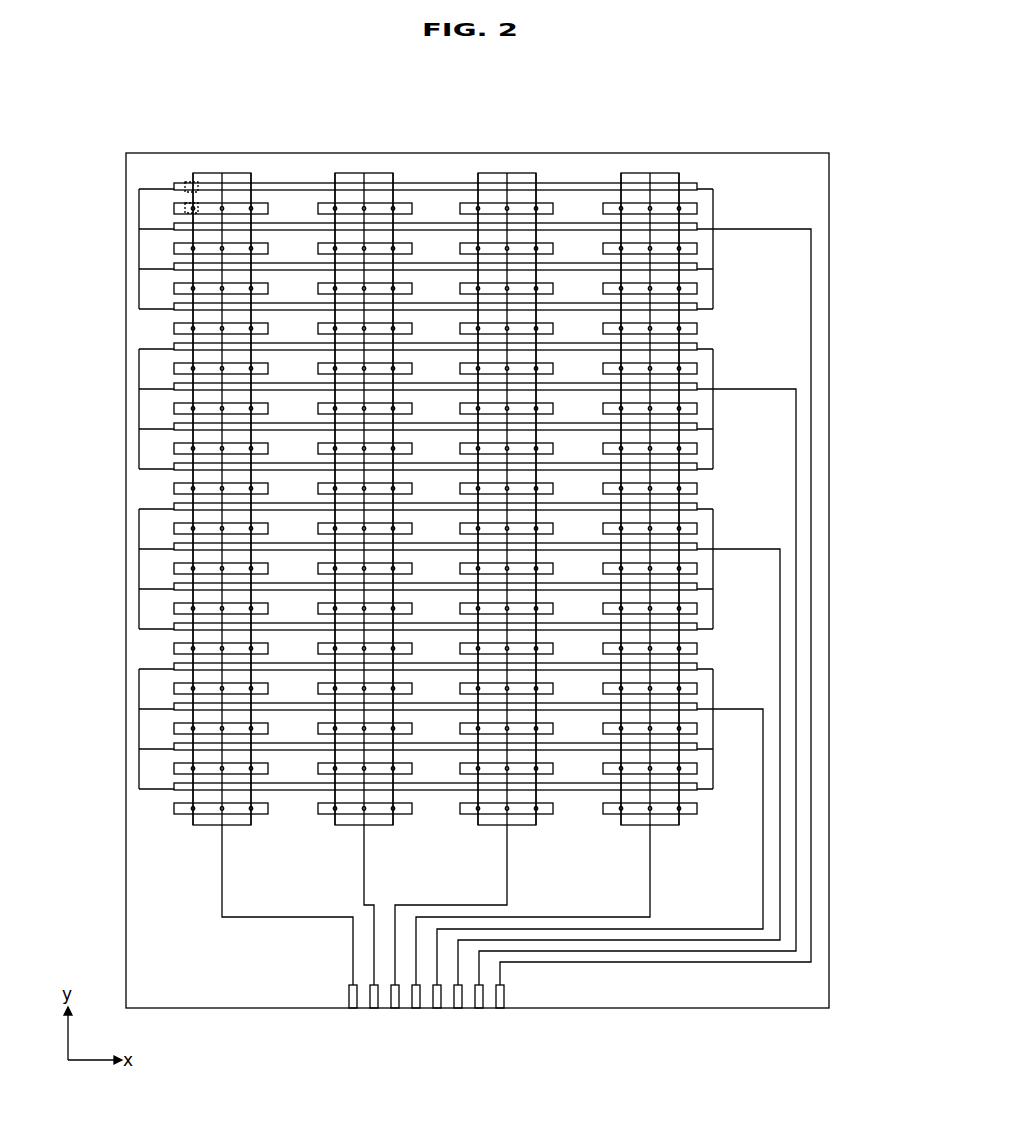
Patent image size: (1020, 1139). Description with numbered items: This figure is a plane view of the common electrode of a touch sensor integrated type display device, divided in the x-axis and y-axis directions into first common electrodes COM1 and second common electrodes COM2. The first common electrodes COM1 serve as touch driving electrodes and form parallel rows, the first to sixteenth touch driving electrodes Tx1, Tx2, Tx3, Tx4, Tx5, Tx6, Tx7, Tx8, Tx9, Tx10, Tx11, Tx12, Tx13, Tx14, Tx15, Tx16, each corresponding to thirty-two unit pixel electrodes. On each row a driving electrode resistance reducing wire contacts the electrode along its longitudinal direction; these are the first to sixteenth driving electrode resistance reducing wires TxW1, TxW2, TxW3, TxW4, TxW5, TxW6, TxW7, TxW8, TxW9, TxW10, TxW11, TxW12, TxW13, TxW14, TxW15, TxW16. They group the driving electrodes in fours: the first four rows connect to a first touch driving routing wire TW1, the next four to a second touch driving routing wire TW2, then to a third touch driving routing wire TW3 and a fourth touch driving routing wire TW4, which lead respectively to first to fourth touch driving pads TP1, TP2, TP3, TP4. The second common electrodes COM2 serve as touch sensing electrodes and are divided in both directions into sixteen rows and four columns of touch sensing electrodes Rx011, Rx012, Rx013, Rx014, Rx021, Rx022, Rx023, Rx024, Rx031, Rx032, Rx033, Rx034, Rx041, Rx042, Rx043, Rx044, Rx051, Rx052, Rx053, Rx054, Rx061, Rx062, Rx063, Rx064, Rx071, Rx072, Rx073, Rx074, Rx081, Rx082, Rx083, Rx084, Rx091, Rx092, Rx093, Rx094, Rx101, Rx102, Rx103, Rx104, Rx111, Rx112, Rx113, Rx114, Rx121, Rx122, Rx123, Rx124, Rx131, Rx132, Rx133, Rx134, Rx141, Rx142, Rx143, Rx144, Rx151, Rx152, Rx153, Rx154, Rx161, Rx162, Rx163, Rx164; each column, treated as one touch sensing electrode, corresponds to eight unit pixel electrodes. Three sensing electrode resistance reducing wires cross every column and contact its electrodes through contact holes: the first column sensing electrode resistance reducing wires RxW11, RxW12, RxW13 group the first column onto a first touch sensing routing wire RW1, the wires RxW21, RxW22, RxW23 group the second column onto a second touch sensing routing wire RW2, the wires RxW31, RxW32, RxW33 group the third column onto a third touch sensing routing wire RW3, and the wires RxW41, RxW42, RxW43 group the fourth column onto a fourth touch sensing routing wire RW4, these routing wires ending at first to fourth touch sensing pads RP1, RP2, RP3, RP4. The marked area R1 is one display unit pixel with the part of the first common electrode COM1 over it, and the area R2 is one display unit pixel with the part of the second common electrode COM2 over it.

The first common electrode COM1 is at (376, 115).
The second common electrode COM2 is at (562, 140).
The first touch driving electrode Tx1 is at (174, 190).
The second touch driving electrode Tx2 is at (174, 230).
The third touch driving electrode Tx3 is at (174, 270).
The fourth touch driving electrode Tx4 is at (174, 310).
The fifth touch driving electrode Tx5 is at (174, 350).
The sixth touch driving electrode Tx6 is at (174, 390).
The seventh touch driving electrode Tx7 is at (174, 430).
The eighth touch driving electrode Tx8 is at (174, 470).
The ninth touch driving electrode Tx9 is at (174, 510).
The tenth touch driving electrode Tx10 is at (174, 550).
The eleventh touch driving electrode Tx11 is at (174, 590).
The twelfth touch driving electrode Tx12 is at (174, 630).
The thirteenth touch driving electrode Tx13 is at (174, 670).
The fourteenth touch driving electrode Tx14 is at (174, 710).
The fifteenth touch driving electrode Tx15 is at (174, 750).
The sixteenth touch driving electrode Tx16 is at (174, 790).
The first driving electrode resistance reducing wire TxW1 is at (139, 186).
The second driving electrode resistance reducing wire TxW2 is at (139, 226).
The third driving electrode resistance reducing wire TxW3 is at (139, 266).
The fourth driving electrode resistance reducing wire TxW4 is at (139, 306).
The fifth driving electrode resistance reducing wire TxW5 is at (139, 346).
The sixth driving electrode resistance reducing wire TxW6 is at (139, 386).
The seventh driving electrode resistance reducing wire TxW7 is at (139, 426).
The eighth driving electrode resistance reducing wire TxW8 is at (139, 466).
The ninth driving electrode resistance reducing wire TxW9 is at (139, 506).
The tenth driving electrode resistance reducing wire TxW10 is at (139, 546).
The eleventh driving electrode resistance reducing wire TxW11 is at (139, 586).
The twelfth driving electrode resistance reducing wire TxW12 is at (139, 626).
The thirteenth driving electrode resistance reducing wire TxW13 is at (139, 666).
The fourteenth driving electrode resistance reducing wire TxW14 is at (139, 706).
The fifteenth driving electrode resistance reducing wire TxW15 is at (139, 746).
The sixteenth driving electrode resistance reducing wire TxW16 is at (139, 786).
The touch sensing electrode Rx011 is at (290, 201).
The touch sensing electrode Rx012 is at (434, 201).
The touch sensing electrode Rx013 is at (575, 201).
The touch sensing electrode Rx014 is at (692, 203).
The touch sensing electrode Rx021 is at (290, 241).
The touch sensing electrode Rx022 is at (434, 241).
The touch sensing electrode Rx023 is at (575, 241).
The touch sensing electrode Rx024 is at (692, 243).
The touch sensing electrode Rx031 is at (290, 281).
The touch sensing electrode Rx032 is at (434, 281).
The touch sensing electrode Rx033 is at (575, 281).
The touch sensing electrode Rx034 is at (692, 283).
The touch sensing electrode Rx041 is at (290, 321).
The touch sensing electrode Rx042 is at (434, 321).
The touch sensing electrode Rx043 is at (575, 321).
The touch sensing electrode Rx044 is at (692, 323).
The touch sensing electrode Rx051 is at (290, 361).
The touch sensing electrode Rx052 is at (434, 361).
The touch sensing electrode Rx053 is at (575, 361).
The touch sensing electrode Rx054 is at (692, 363).
The touch sensing electrode Rx061 is at (290, 401).
The touch sensing electrode Rx062 is at (434, 401).
The touch sensing electrode Rx063 is at (575, 401).
The touch sensing electrode Rx064 is at (692, 403).
The touch sensing electrode Rx071 is at (290, 441).
The touch sensing electrode Rx072 is at (434, 441).
The touch sensing electrode Rx073 is at (575, 441).
The touch sensing electrode Rx074 is at (692, 443).
The touch sensing electrode Rx081 is at (290, 481).
The touch sensing electrode Rx082 is at (434, 481).
The touch sensing electrode Rx083 is at (575, 481).
The touch sensing electrode Rx084 is at (692, 483).
The touch sensing electrode Rx091 is at (290, 521).
The touch sensing electrode Rx092 is at (434, 521).
The touch sensing electrode Rx093 is at (575, 521).
The touch sensing electrode Rx094 is at (692, 523).
The touch sensing electrode Rx101 is at (290, 561).
The touch sensing electrode Rx102 is at (434, 561).
The touch sensing electrode Rx103 is at (575, 561).
The touch sensing electrode Rx104 is at (692, 563).
The touch sensing electrode Rx111 is at (290, 601).
The touch sensing electrode Rx112 is at (434, 601).
The touch sensing electrode Rx113 is at (575, 601).
The touch sensing electrode Rx114 is at (692, 603).
The touch sensing electrode Rx121 is at (290, 641).
The touch sensing electrode Rx122 is at (434, 641).
The touch sensing electrode Rx123 is at (575, 641).
The touch sensing electrode Rx124 is at (692, 643).
The touch sensing electrode Rx131 is at (290, 681).
The touch sensing electrode Rx132 is at (434, 681).
The touch sensing electrode Rx133 is at (575, 681).
The touch sensing electrode Rx134 is at (692, 683).
The touch sensing electrode Rx141 is at (290, 721).
The touch sensing electrode Rx142 is at (434, 721).
The touch sensing electrode Rx143 is at (575, 721).
The touch sensing electrode Rx144 is at (692, 723).
The touch sensing electrode Rx151 is at (290, 761).
The touch sensing electrode Rx152 is at (434, 761).
The touch sensing electrode Rx153 is at (575, 761).
The touch sensing electrode Rx154 is at (692, 763).
The touch sensing electrode Rx161 is at (290, 801).
The touch sensing electrode Rx162 is at (434, 801).
The touch sensing electrode Rx163 is at (575, 801).
The touch sensing electrode Rx164 is at (692, 803).
The first column sensing electrode resistance reducing wire RxW11 is at (190, 826).
The first column sensing electrode resistance reducing wire RxW12 is at (224, 828).
The first column sensing electrode resistance reducing wire RxW13 is at (254, 827).
The second column sensing electrode resistance reducing wire RxW21 is at (332, 826).
The second column sensing electrode resistance reducing wire RxW22 is at (366, 828).
The second column sensing electrode resistance reducing wire RxW23 is at (396, 827).
The third column sensing electrode resistance reducing wire RxW31 is at (475, 826).
The third column sensing electrode resistance reducing wire RxW32 is at (509, 828).
The third column sensing electrode resistance reducing wire RxW33 is at (539, 827).
The fourth column sensing electrode resistance reducing wire RxW41 is at (618, 826).
The fourth column sensing electrode resistance reducing wire RxW42 is at (652, 828).
The fourth column sensing electrode resistance reducing wire RxW43 is at (682, 827).
The first touch sensing routing wire RW1 is at (222, 893).
The second touch sensing routing wire RW2 is at (364, 893).
The third touch sensing routing wire RW3 is at (507, 893).
The fourth touch sensing routing wire RW4 is at (650, 893).
The first touch driving routing wire TW1 is at (811, 355).
The second touch driving routing wire TW2 is at (796, 476).
The third touch driving routing wire TW3 is at (780, 592).
The fourth touch driving routing wire TW4 is at (763, 764).
The first touch sensing pad RP1 is at (353, 1009).
The second touch sensing pad RP2 is at (374, 1009).
The third touch sensing pad RP3 is at (395, 1009).
The fourth touch sensing pad RP4 is at (416, 1009).
The first touch driving pad TP1 is at (500, 1009).
The second touch driving pad TP2 is at (479, 1009).
The third touch driving pad TP3 is at (458, 1009).
The fourth touch driving pad TP4 is at (437, 1009).
The area R1 is at (192, 182).
The area R2 is at (186, 203).